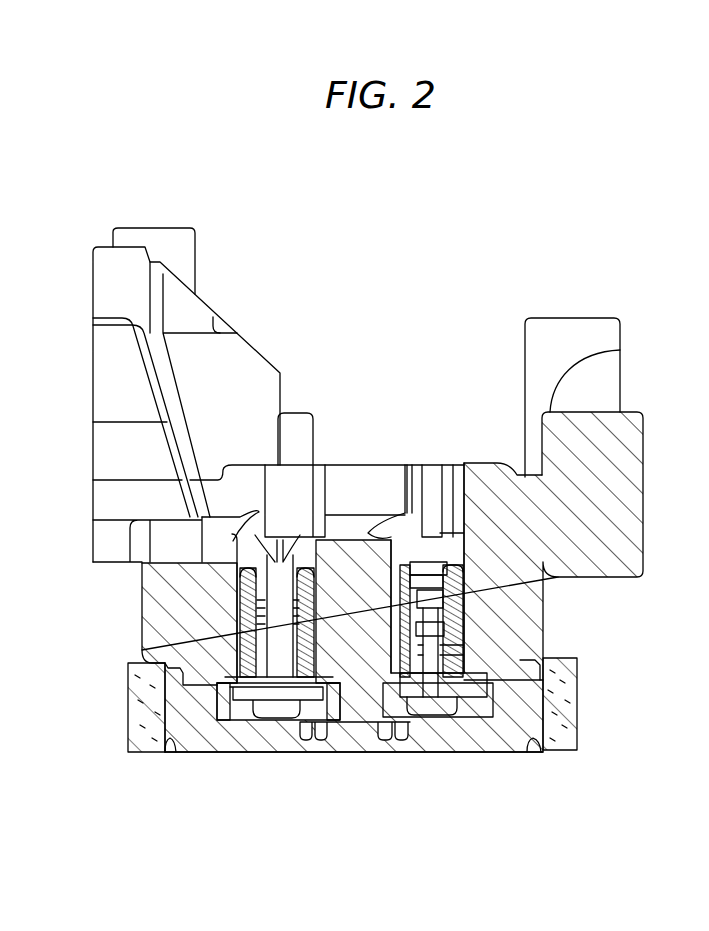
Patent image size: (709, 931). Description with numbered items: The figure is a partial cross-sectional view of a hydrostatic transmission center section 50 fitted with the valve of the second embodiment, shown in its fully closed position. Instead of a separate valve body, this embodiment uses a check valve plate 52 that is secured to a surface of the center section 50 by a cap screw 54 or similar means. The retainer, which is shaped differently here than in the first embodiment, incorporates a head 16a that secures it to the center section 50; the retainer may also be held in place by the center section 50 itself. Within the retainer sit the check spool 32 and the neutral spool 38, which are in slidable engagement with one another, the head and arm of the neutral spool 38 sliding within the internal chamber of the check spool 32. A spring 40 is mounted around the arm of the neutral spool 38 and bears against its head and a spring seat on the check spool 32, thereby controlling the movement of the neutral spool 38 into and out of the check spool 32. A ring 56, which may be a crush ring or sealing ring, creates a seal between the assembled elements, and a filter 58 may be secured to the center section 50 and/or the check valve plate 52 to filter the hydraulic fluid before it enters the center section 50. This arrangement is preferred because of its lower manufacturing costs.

The head 16a is at (483, 625).
The check spool 32 is at (441, 714).
The neutral spool 38 is at (438, 625).
The spring 40 is at (448, 651).
The center section 50 is at (646, 442).
The check valve plate 52 is at (358, 712).
The cap screw 54 is at (262, 742).
The ring 56 is at (232, 658).
The filter 58 is at (128, 727).